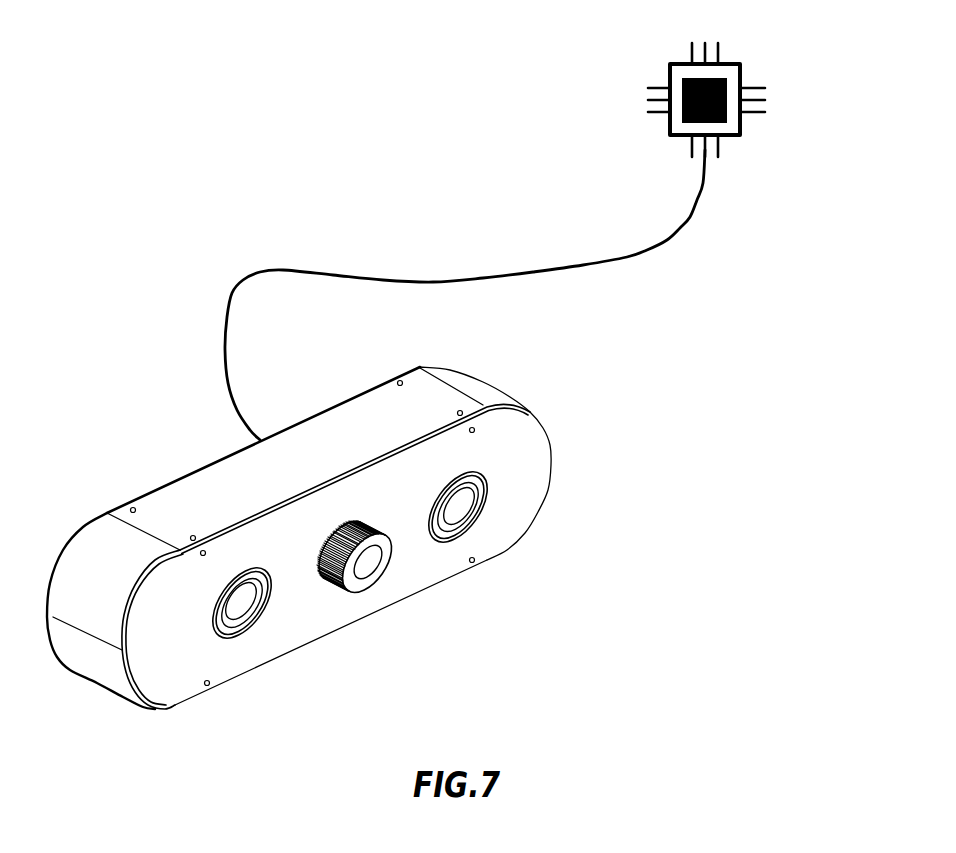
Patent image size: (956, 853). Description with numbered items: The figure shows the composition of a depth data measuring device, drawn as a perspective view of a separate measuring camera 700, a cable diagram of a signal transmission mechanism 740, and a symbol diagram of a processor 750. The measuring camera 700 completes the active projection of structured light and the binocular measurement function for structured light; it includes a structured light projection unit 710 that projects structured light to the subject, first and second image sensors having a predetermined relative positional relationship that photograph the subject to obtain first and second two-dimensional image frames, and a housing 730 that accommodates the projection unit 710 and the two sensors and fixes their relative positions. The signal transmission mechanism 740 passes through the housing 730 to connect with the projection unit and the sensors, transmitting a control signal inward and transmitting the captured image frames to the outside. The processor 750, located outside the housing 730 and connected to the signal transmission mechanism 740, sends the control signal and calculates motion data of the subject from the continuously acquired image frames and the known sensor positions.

The measuring camera 700 is at (342, 545).
The structured light projection unit 710 is at (382, 592).
The housing 730 is at (528, 457).
The signal transmission mechanism 740 is at (465, 295).
The processor 750 is at (747, 45).